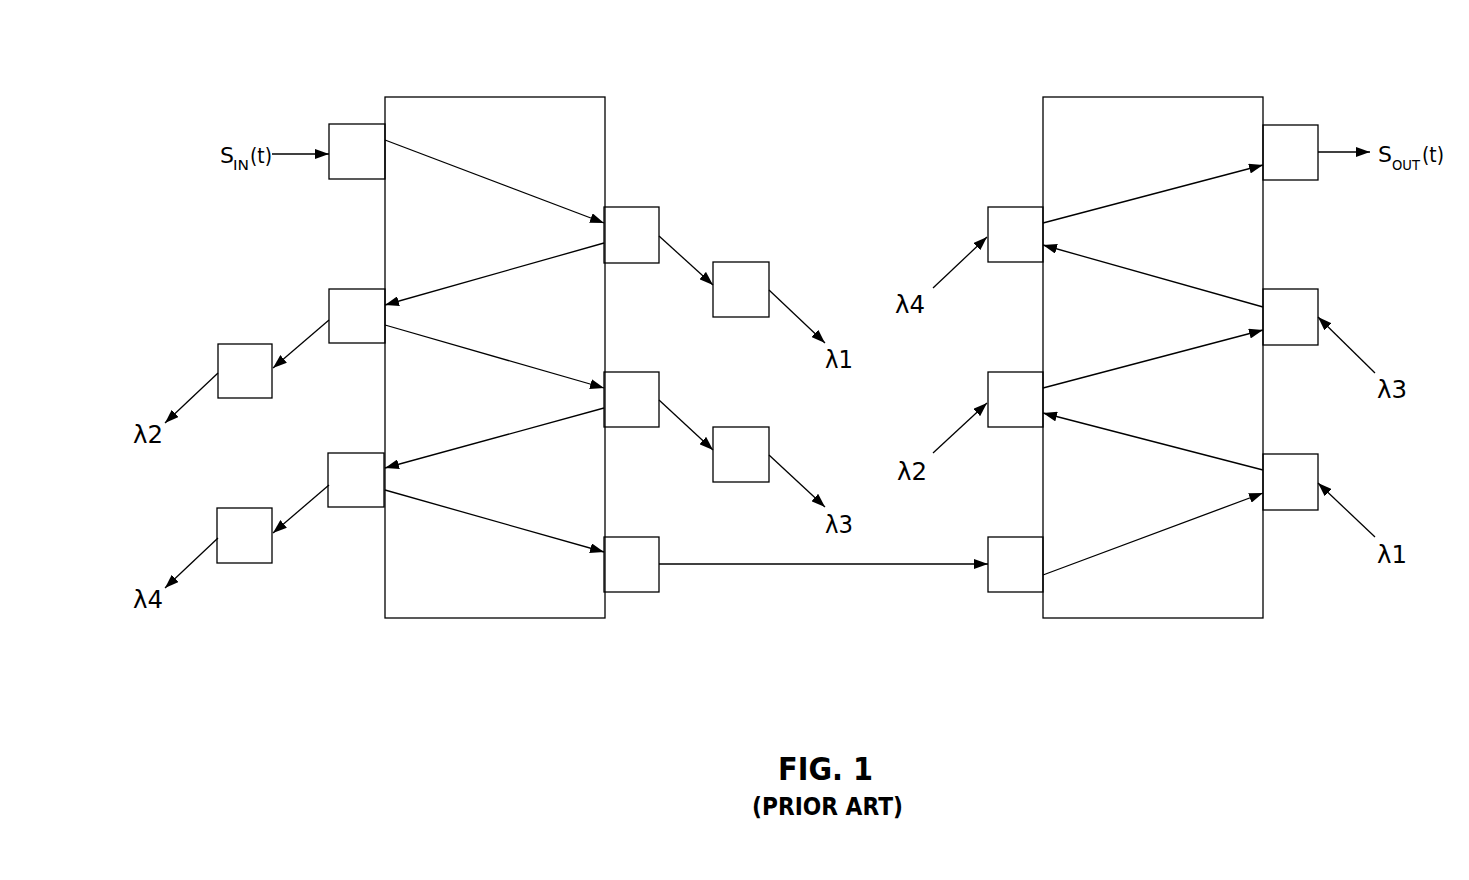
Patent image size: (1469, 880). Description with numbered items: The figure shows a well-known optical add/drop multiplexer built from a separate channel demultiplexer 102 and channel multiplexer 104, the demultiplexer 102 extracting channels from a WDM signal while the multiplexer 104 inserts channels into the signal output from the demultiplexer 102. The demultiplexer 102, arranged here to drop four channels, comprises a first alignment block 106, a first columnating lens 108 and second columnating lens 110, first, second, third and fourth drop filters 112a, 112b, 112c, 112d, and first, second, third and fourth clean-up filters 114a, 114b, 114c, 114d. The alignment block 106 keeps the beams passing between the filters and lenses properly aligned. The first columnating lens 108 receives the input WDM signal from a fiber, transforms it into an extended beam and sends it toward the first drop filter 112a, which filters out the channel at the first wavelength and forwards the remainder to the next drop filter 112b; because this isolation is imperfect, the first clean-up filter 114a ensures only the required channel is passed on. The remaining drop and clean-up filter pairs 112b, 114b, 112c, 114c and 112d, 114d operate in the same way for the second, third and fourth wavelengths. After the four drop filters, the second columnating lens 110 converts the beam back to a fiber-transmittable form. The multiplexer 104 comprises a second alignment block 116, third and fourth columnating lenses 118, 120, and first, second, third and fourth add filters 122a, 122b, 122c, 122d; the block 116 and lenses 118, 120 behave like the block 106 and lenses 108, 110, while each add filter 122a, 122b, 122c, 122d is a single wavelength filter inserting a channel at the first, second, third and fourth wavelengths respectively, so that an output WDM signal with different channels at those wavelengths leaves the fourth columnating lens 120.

The channel demultiplexer 102 is at (532, 653).
The channel multiplexer 104 is at (1180, 653).
The first alignment block 106 is at (493, 97).
The first columnating lens 108 is at (350, 124).
The second columnating lens 110 is at (630, 537).
The first drop filter 112a is at (630, 207).
The second drop filter 112b is at (350, 289).
The third drop filter 112c is at (630, 372).
The fourth drop filter 112d is at (350, 453).
The first clean-up filter 114a is at (738, 262).
The second clean-up filter 114b is at (238, 344).
The third clean-up filter 114c is at (738, 427).
The fourth clean-up filter 114d is at (238, 508).
The second alignment block 116 is at (1162, 97).
The third columnating lens 118 is at (1013, 537).
The fourth columnating lens 120 is at (1288, 125).
The first add filter 122a is at (1288, 454).
The second add filter 122b is at (1013, 372).
The third add filter 122c is at (1288, 289).
The fourth add filter 122d is at (1012, 207).